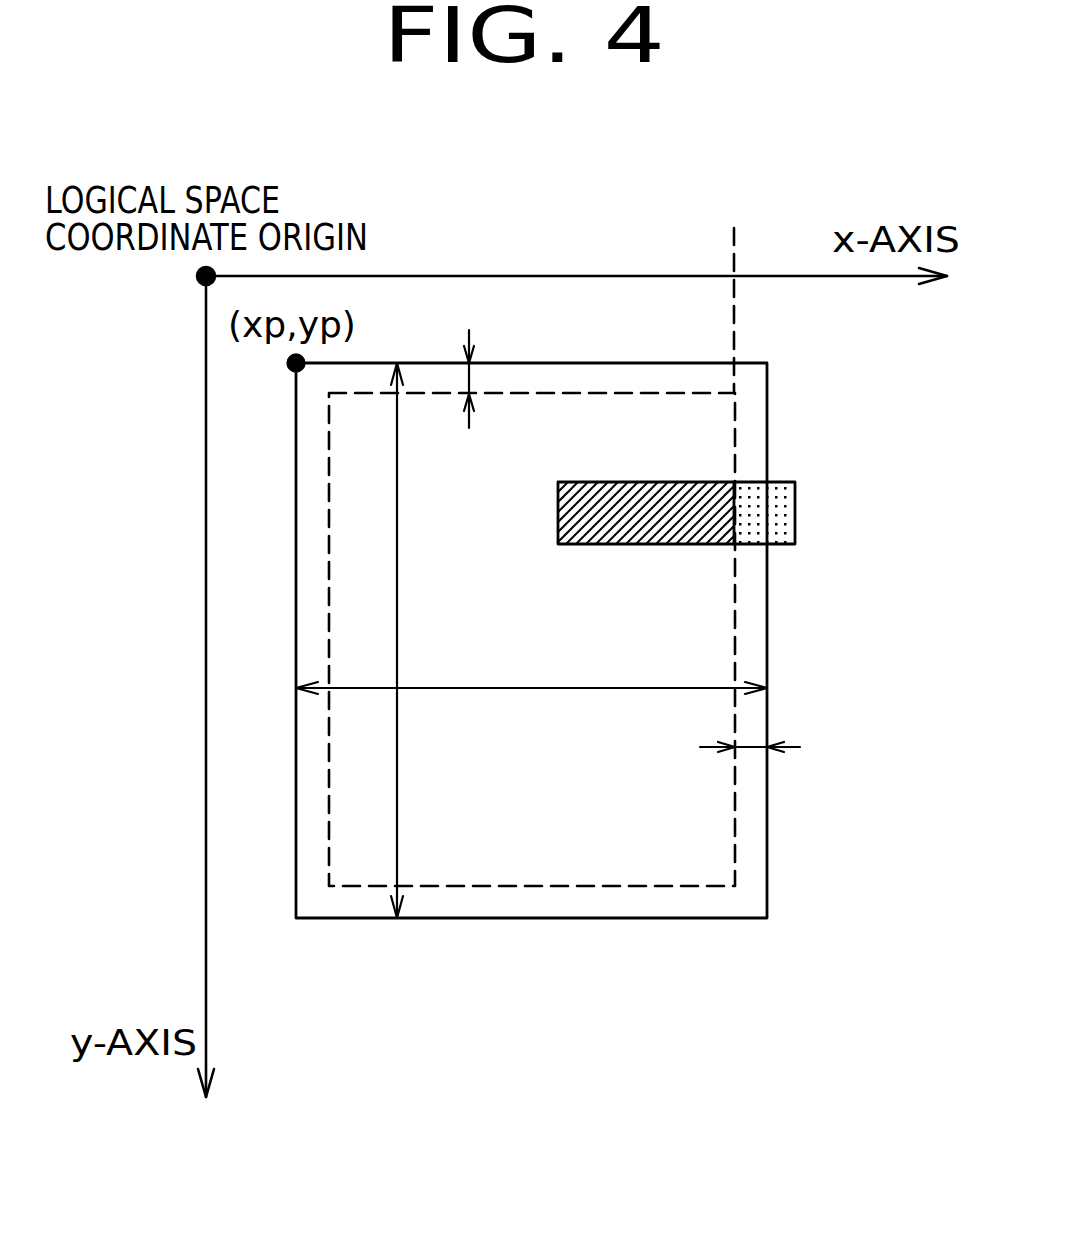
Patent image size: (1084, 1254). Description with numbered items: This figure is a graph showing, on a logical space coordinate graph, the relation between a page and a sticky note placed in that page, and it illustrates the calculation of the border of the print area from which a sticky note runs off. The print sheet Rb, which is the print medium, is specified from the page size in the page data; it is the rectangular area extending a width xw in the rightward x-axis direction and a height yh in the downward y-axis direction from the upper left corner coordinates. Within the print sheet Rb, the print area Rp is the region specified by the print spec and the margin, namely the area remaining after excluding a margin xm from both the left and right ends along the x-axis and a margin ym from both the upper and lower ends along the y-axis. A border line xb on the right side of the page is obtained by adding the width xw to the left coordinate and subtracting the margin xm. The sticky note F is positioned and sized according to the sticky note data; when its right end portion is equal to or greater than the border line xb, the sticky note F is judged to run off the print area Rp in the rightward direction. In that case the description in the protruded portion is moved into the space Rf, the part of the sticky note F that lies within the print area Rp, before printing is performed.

The print sheet Rb is at (330, 920).
The print area Rp is at (737, 812).
The space in the print area in the sticky note Rf is at (633, 481).
The sticky note F is at (692, 479).
The border line xb is at (735, 291).
The margin in x-axis direction xm is at (780, 747).
The margin in y-axis direction ym is at (473, 357).
The width of print sheet xw is at (531, 670).
The height of print sheet yh is at (421, 640).